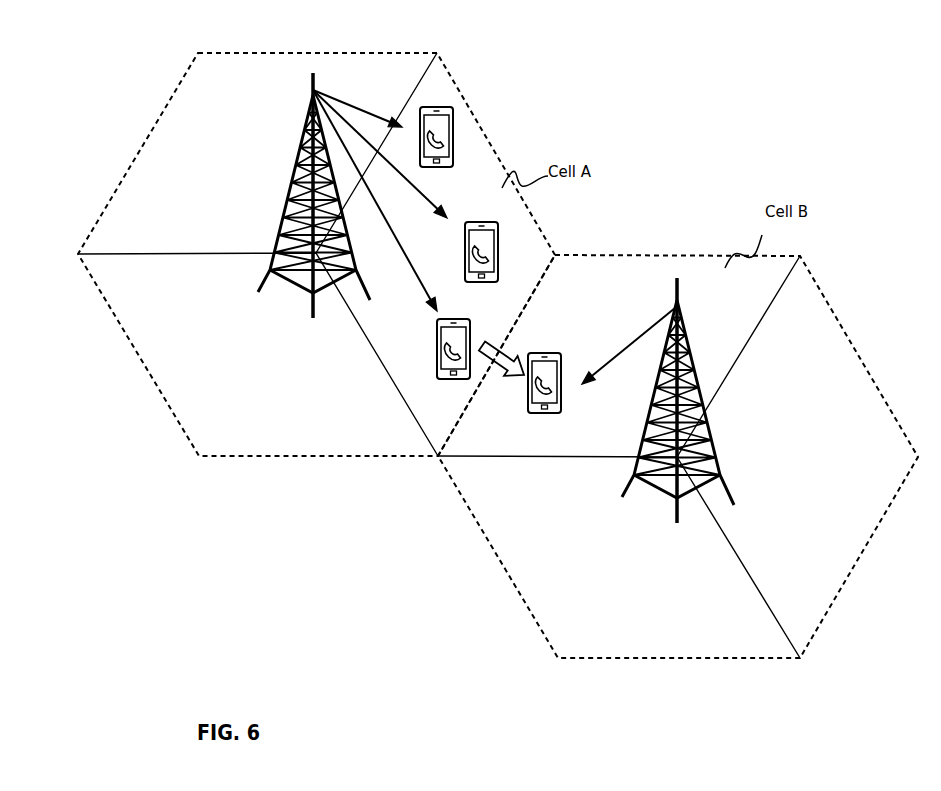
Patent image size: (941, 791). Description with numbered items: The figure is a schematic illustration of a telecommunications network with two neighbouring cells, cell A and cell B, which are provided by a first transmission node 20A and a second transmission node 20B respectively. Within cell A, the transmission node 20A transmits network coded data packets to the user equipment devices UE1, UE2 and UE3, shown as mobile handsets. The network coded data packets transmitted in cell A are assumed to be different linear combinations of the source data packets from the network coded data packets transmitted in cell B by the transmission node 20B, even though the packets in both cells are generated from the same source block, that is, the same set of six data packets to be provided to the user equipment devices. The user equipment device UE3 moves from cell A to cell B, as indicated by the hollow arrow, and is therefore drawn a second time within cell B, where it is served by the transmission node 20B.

The transmission node 20A is at (295, 178).
The transmission node 20B is at (718, 456).
The user equipment device UE1 is at (456, 139).
The user equipment device UE2 is at (500, 252).
The user equipment device UE3 is at (479, 380).